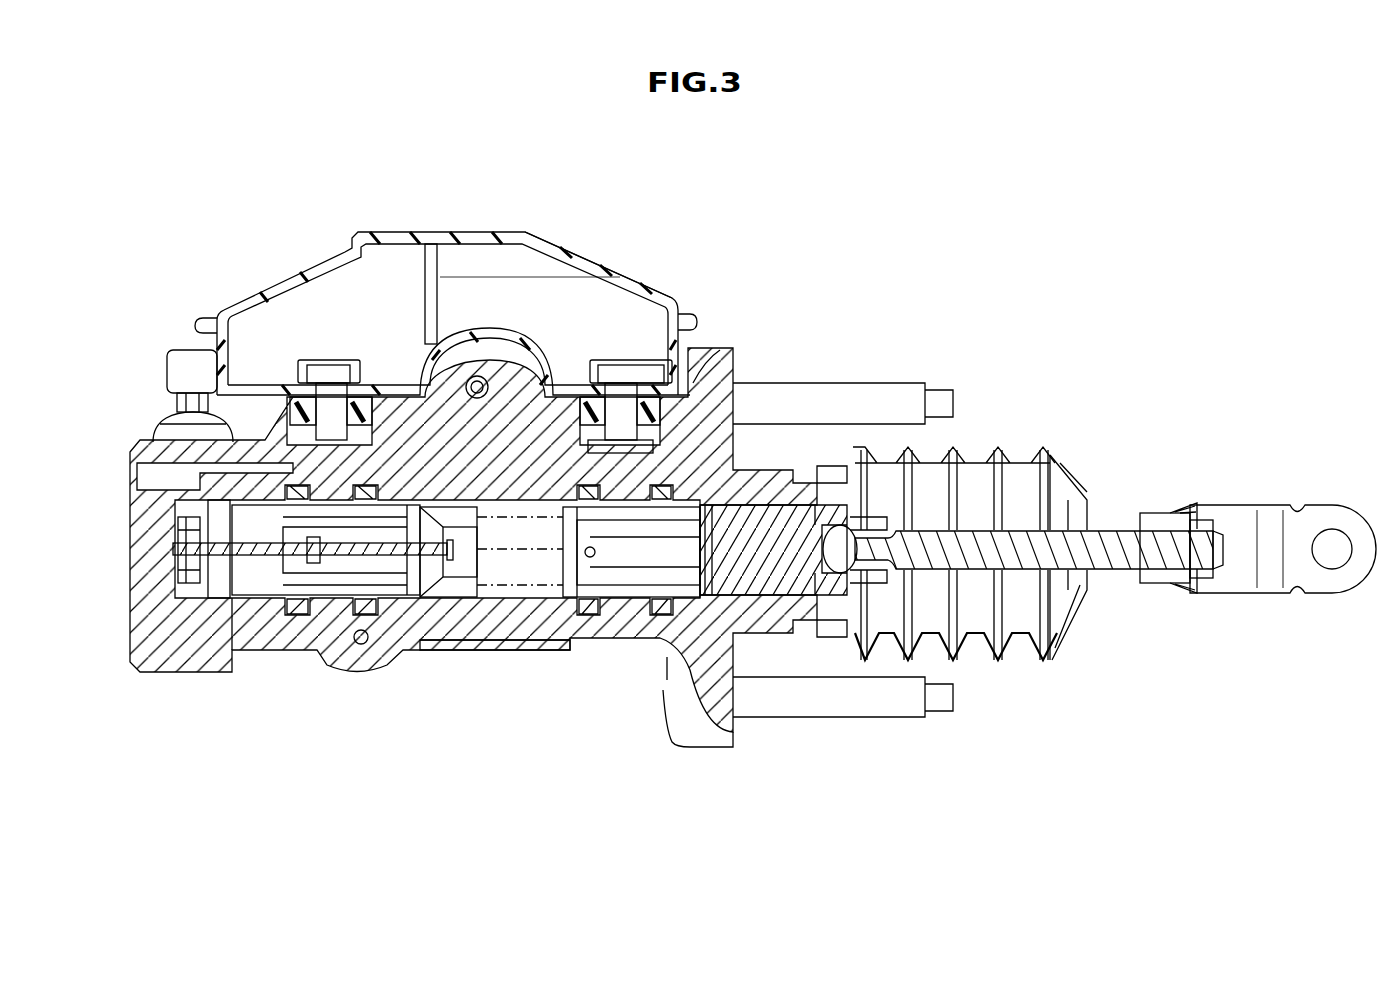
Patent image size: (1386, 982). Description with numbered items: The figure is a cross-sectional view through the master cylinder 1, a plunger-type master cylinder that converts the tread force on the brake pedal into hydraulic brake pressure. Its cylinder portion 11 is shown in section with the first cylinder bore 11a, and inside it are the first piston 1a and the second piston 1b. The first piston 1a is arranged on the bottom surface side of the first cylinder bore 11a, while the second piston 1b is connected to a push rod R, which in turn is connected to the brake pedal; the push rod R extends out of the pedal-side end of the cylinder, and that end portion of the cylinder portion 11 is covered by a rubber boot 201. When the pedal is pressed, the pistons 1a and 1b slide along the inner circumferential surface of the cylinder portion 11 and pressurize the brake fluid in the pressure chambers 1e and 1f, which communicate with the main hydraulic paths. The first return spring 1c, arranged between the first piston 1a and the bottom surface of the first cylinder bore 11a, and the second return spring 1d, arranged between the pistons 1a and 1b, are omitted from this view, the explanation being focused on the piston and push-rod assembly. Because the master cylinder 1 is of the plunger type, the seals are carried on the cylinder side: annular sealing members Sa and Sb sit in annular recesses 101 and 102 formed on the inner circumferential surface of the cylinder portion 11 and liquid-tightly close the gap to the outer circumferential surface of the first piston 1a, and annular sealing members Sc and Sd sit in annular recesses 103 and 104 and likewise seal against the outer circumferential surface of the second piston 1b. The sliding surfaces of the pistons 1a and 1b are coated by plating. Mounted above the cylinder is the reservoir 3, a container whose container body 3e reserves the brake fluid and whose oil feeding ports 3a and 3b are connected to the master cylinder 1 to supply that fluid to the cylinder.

The master cylinder 1 is at (942, 249).
The first piston 1a is at (437, 580).
The second piston 1b is at (787, 530).
The first return spring 1c is at (238, 600).
The second return spring 1d is at (532, 600).
The pressure chamber 1e is at (178, 590).
The pressure chamber 1f is at (500, 597).
The cylinder portion 11 is at (189, 648).
The first cylinder bore 11a is at (247, 523).
The annular recess 101 is at (300, 600).
The annular recess 102 is at (377, 603).
The annular recess 103 is at (588, 605).
The annular recess 104 is at (660, 605).
The reservoir 3 is at (461, 231).
The oil feeding port 3a is at (302, 400).
The oil feeding port 3b is at (610, 445).
The container body 3e is at (593, 250).
The annular sealing member Sa is at (295, 490).
The annular sealing member Sb is at (377, 400).
The annular sealing member Sc is at (588, 487).
The annular sealing member Sd is at (662, 485).
The rubber boot 201 is at (1078, 467).
The push rod R is at (1117, 537).